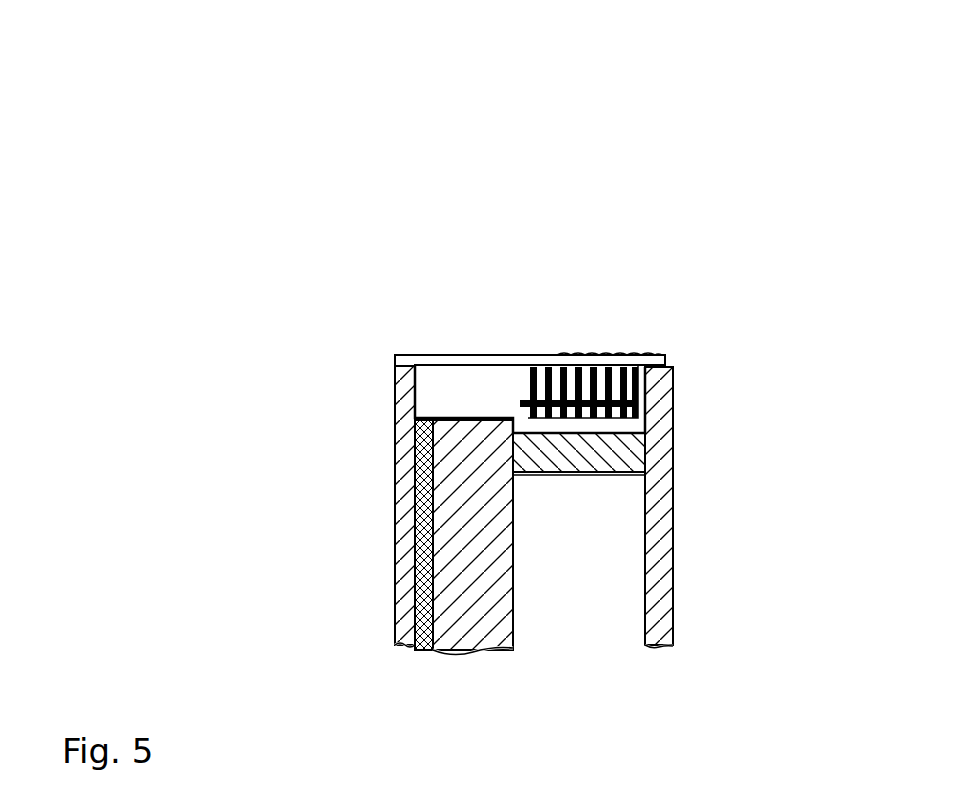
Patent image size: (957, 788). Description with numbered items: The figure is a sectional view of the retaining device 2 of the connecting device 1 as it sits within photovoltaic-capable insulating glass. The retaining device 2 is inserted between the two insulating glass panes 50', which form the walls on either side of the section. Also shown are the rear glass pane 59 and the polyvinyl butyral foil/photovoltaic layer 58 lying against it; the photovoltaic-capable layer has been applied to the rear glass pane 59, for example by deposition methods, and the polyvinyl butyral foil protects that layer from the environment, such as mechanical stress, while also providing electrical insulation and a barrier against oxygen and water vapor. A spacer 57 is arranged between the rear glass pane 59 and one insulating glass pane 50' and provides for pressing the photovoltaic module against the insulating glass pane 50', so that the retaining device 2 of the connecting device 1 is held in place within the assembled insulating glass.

The connecting device 1 is at (456, 172).
The retaining device 2 is at (503, 371).
The insulating glass pane 50' is at (558, 407).
The spacer 57 is at (628, 448).
The polyvinyl butyral foil/photovoltaic layer 58 is at (423, 475).
The rear glass pane 59 is at (457, 520).